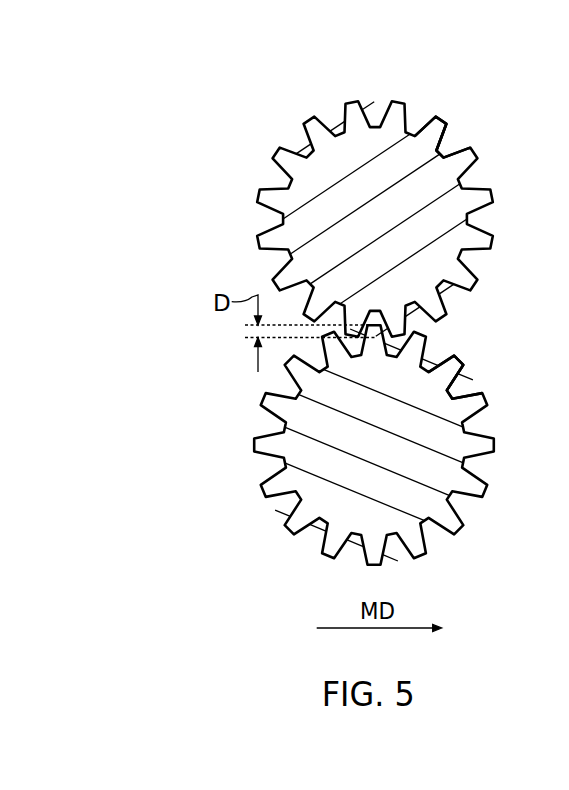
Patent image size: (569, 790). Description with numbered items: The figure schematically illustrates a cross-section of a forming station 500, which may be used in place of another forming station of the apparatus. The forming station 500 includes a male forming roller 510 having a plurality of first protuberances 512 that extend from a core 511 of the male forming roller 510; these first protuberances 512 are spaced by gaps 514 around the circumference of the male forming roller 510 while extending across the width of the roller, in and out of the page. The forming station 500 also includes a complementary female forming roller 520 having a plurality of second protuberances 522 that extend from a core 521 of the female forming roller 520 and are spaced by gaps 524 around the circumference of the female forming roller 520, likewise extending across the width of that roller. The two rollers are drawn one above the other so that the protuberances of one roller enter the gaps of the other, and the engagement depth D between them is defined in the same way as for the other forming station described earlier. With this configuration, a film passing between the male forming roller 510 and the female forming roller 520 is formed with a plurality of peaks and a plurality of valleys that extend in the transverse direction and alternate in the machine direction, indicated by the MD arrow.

The forming station 500 is at (282, 78).
The male forming roller 510 is at (262, 168).
The core 511 is at (389, 230).
The first protuberances 512 is at (441, 120).
The gaps 514 is at (439, 153).
The female forming roller 520 is at (258, 508).
The core 521 is at (392, 458).
The second protuberances 522 is at (458, 360).
The gaps 524 is at (449, 394).